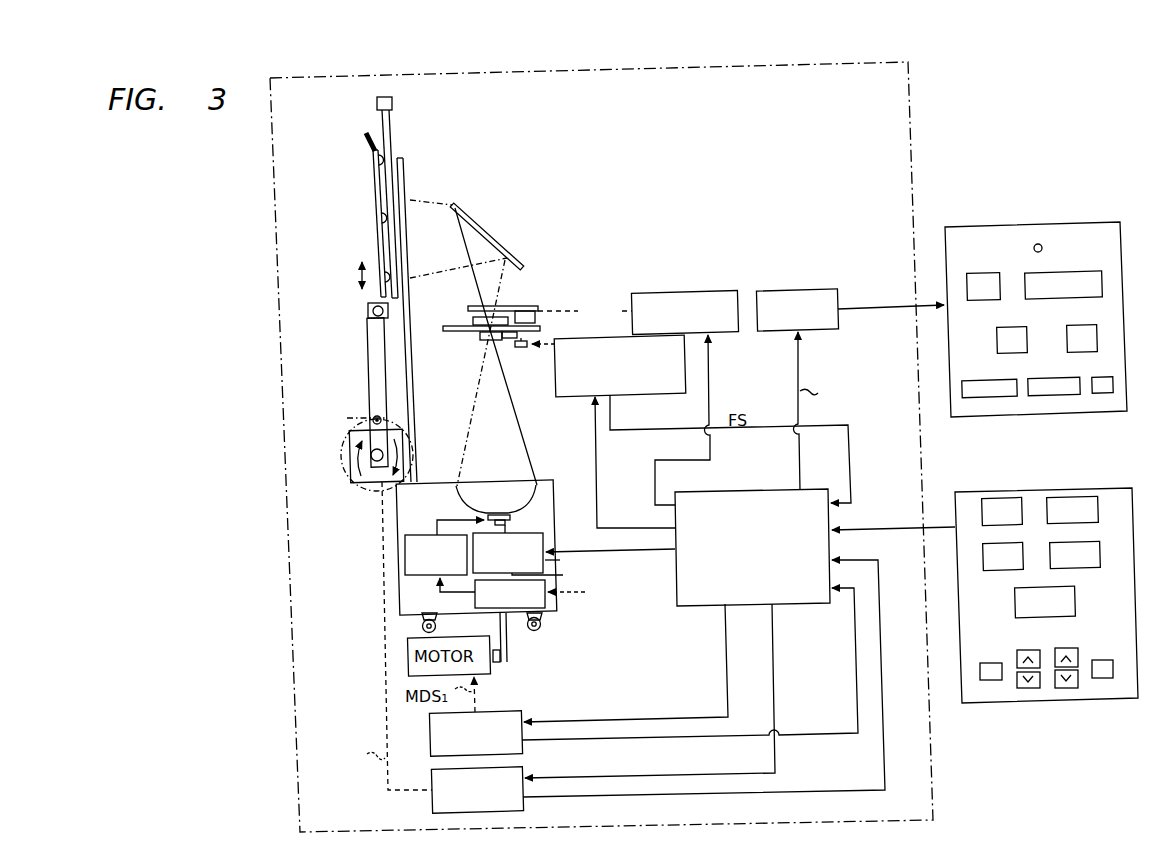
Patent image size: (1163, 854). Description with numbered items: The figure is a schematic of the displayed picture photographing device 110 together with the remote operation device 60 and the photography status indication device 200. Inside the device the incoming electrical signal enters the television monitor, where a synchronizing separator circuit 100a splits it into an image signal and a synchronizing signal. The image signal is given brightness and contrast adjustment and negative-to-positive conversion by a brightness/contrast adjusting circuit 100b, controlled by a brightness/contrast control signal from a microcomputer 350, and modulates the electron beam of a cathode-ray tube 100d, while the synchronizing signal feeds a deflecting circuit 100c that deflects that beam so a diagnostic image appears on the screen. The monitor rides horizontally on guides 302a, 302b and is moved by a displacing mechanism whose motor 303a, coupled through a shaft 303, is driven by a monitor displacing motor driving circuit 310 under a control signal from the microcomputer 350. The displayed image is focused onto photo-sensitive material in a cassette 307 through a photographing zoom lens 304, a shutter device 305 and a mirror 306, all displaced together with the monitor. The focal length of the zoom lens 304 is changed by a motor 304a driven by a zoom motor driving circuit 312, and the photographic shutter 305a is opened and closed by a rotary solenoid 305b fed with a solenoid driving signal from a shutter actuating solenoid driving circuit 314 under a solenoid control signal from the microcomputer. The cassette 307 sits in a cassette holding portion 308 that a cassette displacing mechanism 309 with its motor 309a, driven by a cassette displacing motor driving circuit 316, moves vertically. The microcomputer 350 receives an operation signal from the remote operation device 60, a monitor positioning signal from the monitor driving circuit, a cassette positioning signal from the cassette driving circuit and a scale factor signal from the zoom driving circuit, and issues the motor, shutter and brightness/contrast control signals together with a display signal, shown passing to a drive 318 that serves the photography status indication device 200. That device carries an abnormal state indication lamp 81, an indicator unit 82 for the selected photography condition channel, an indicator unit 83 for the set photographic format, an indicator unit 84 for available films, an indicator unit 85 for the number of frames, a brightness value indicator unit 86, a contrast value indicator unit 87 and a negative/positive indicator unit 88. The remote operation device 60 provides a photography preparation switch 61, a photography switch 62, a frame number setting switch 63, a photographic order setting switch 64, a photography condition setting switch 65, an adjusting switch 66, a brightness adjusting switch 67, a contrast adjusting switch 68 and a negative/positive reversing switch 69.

The displayed picture photographing device 110 is at (911, 80).
The cassette 307 is at (403, 170).
The cassette holding portion 308 is at (412, 198).
The mirror 306 is at (475, 222).
The shutter device 305 is at (525, 299).
The photographic shutter 305a is at (480, 312).
The rotary solenoid 305b is at (540, 313).
The photographing zoom lens 304 is at (482, 337).
The zoom motor 304a is at (521, 348).
The cassette displacing mechanism 309 is at (362, 395).
The cassette displacing motor 309a is at (352, 448).
The synchronizing separator circuit 100a is at (476, 558).
The brightness/contrast adjusting circuit 100b is at (560, 560).
The deflecting circuit 100c is at (416, 533).
The cathode-ray tube 100d is at (457, 487).
The zoom motor driving circuit 312 is at (563, 398).
The shutter actuating solenoid driving circuit 314 is at (713, 292).
The drive 318 is at (818, 290).
The microcomputer 350 is at (762, 491).
The guide 302a is at (418, 626).
The guide 302b is at (542, 624).
The shaft 303 is at (511, 655).
The monitor displacing motor 303a is at (500, 665).
The monitor displacing motor driving circuit 310 is at (525, 716).
The cassette displacing motor driving circuit 316 is at (525, 770).
The photography status indication device 200 is at (1090, 222).
The abnormal state indication lamp 81 is at (1043, 246).
The indicator unit 82 is at (985, 272).
The indicator unit 83 is at (1087, 272).
The indicator unit 84 is at (996, 335).
The indicator unit 85 is at (1067, 330).
The brightness value indicator unit 86 is at (967, 380).
The contrast value indicator unit 87 is at (1042, 378).
The negative/positive indicator unit 88 is at (1113, 386).
The remote operation device 60 is at (1113, 488).
The photography preparation switch 61 is at (993, 498).
The photography switch 62 is at (1072, 497).
The frame number setting switch 63 is at (985, 569).
The photographic order setting switch 64 is at (1100, 562).
The photography condition setting switch 65 is at (1015, 610).
The adjusting switch 66 is at (992, 681).
The brightness adjusting switch 67 is at (1033, 652).
The contrast adjusting switch 68 is at (1072, 652).
The negative/positive reversing switch 69 is at (1113, 666).